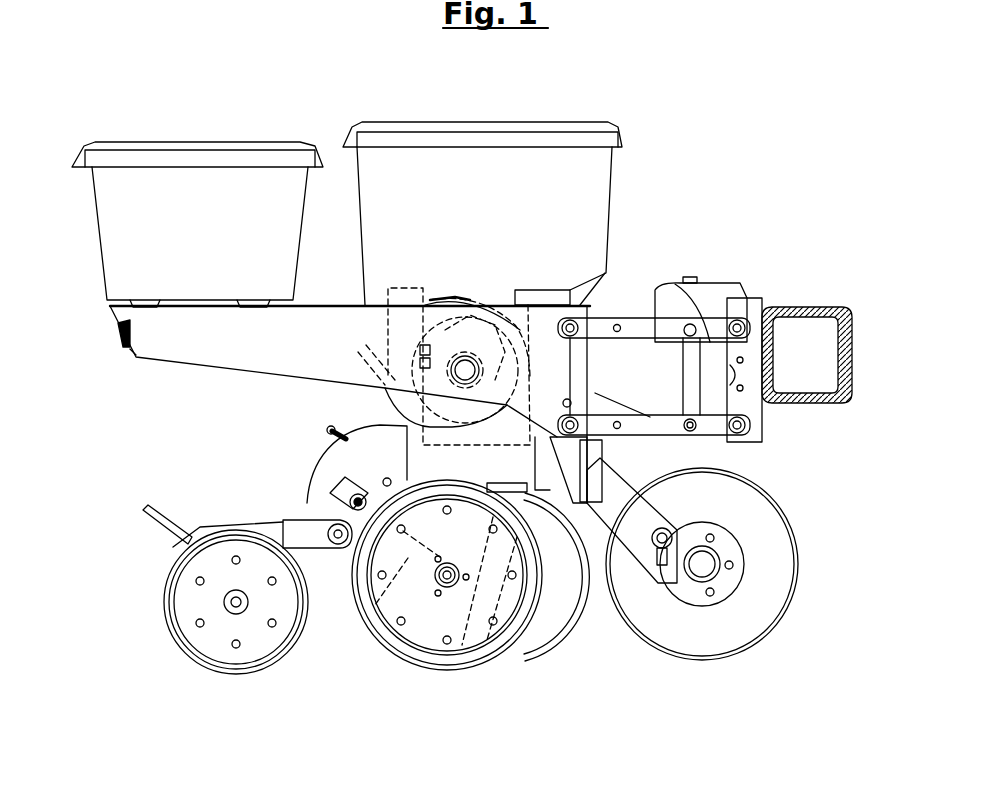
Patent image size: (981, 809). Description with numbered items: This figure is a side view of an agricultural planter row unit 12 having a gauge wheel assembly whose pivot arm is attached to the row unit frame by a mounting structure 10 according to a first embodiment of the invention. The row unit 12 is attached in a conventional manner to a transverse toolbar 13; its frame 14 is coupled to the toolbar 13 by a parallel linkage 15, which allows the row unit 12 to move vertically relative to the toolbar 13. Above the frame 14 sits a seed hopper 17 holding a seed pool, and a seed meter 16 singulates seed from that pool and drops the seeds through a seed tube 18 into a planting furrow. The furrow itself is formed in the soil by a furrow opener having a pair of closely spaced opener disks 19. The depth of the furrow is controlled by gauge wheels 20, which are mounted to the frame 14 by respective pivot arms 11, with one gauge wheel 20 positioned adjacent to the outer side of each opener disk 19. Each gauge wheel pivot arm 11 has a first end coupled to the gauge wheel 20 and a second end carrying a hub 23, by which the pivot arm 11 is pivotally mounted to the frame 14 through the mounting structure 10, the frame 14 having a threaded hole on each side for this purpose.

The mounting structure 10 is at (347, 498).
The gauge wheel pivot arm 11 is at (373, 610).
The planter row unit 12 is at (640, 233).
The toolbar 13 is at (807, 313).
The frame 14 is at (340, 460).
The parallel linkage 15 is at (633, 333).
The seed meter 16 is at (528, 305).
The seed hopper 17 is at (347, 214).
The seed tube 18 is at (520, 502).
The opener disks 19 is at (538, 650).
The gauge wheels 20 is at (425, 643).
The hub 23 is at (338, 480).